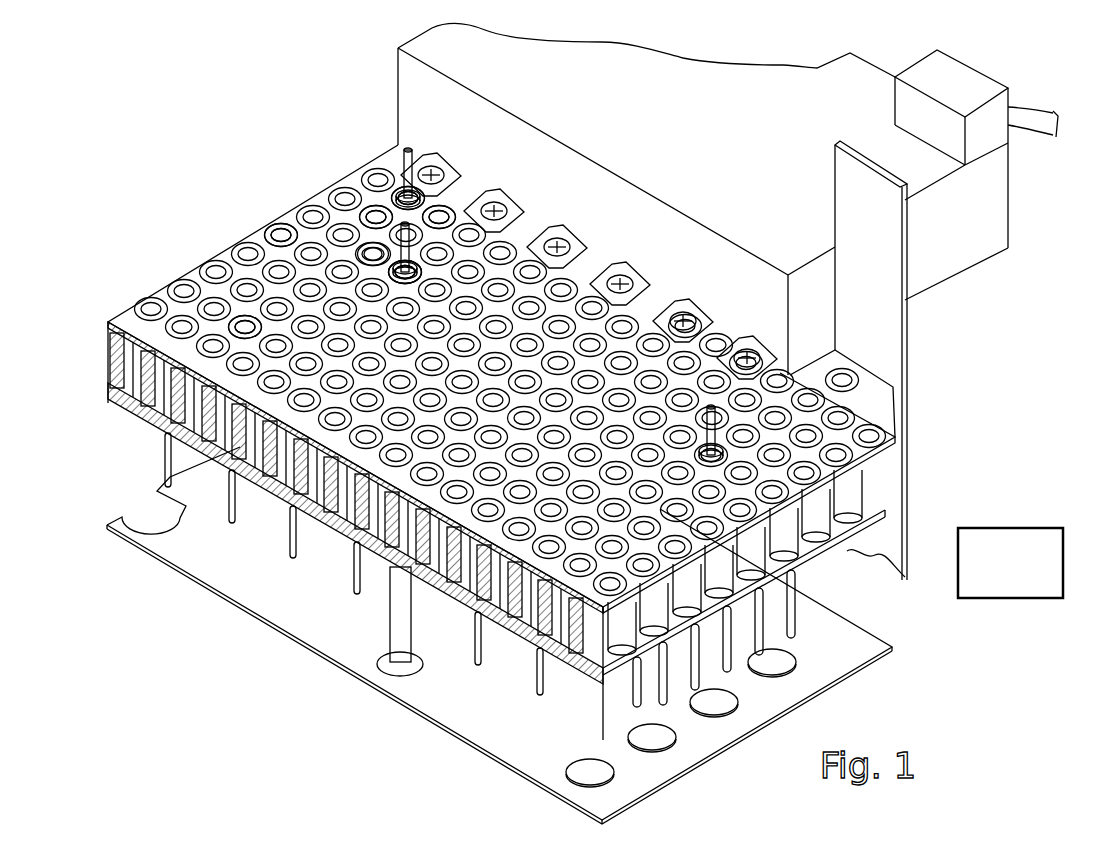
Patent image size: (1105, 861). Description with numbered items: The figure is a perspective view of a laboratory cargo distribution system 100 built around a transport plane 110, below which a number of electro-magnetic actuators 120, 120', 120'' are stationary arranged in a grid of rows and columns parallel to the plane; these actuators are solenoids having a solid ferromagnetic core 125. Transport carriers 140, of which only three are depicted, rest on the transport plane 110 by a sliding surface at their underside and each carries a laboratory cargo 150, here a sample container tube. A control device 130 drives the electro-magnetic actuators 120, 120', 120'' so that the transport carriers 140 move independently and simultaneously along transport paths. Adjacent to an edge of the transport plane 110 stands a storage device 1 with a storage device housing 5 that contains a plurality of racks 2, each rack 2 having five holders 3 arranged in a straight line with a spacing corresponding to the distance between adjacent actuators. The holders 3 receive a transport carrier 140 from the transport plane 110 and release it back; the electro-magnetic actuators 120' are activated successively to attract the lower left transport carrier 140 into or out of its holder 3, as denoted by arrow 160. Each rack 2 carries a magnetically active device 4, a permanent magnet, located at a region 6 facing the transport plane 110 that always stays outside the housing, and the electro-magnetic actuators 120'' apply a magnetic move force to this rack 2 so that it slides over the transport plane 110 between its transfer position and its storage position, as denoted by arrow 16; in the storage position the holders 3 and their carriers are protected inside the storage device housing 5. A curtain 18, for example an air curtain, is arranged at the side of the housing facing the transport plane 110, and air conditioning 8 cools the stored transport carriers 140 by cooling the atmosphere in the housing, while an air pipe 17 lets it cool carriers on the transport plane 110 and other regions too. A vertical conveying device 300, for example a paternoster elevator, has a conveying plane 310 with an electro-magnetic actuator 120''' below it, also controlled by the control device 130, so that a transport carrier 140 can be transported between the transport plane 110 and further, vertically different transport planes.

The storage device 1 is at (646, 199).
The rack 2 is at (445, 160).
The holder 3 is at (395, 205).
The magnetically active device 4 is at (286, 271).
The storage device housing 5 is at (985, 209).
The region 6 is at (307, 257).
The air conditioning 8 is at (951, 107).
The arrow 16 is at (228, 310).
The air pipe 17 is at (1027, 107).
The curtain 18 is at (425, 97).
The laboratory cargo distribution system 100 is at (198, 629).
The transport plane 110 is at (171, 300).
The electro-magnetic actuator 120 is at (480, 605).
The electro-magnetic actuator 120' is at (300, 437).
The electro-magnetic actuator 120'' is at (347, 170).
The electro-magnetic actuator 120''' is at (929, 372).
The solid ferromagnetic core 125 is at (583, 540).
The control device 130 is at (1010, 563).
The transport carrier 140 is at (396, 198).
The laboratory cargo 150 is at (404, 160).
The arrow 160 is at (353, 228).
The vertical conveying device 300 is at (883, 324).
The conveying plane 310 is at (862, 395).